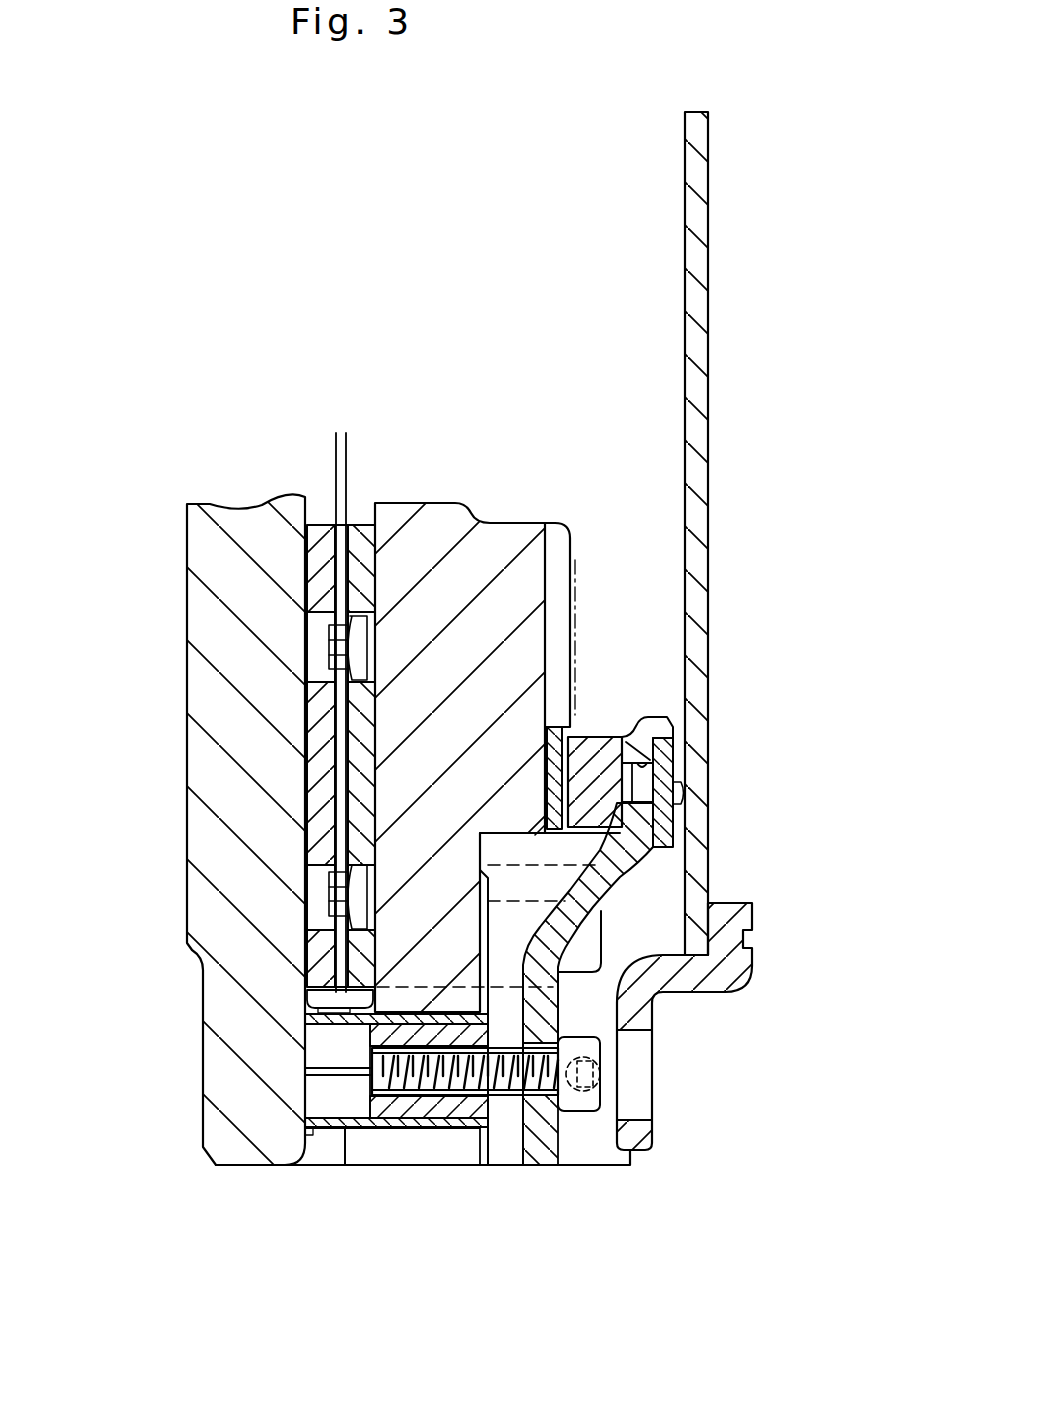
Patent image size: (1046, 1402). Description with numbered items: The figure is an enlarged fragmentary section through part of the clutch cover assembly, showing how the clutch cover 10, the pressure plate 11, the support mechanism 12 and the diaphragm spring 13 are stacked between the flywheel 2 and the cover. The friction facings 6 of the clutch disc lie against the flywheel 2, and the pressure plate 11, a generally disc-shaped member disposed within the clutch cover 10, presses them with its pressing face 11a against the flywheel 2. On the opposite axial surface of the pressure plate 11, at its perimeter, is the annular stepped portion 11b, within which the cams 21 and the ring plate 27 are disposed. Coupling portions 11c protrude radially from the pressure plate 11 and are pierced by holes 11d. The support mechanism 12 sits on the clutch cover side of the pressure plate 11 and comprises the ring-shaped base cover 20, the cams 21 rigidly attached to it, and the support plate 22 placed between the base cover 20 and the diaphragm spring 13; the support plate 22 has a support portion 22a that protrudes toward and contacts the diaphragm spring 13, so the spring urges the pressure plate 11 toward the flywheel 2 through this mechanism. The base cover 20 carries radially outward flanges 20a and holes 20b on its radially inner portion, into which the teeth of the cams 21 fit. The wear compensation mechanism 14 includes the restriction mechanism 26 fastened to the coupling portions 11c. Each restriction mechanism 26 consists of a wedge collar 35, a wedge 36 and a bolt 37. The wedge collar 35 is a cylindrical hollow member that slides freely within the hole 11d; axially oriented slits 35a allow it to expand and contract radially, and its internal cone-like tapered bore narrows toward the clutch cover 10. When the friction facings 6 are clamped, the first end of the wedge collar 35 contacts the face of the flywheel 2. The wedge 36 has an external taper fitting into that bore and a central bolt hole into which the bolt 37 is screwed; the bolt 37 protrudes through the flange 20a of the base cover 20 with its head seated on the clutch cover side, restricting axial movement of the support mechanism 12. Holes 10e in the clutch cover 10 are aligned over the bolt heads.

The flywheel 2 is at (205, 596).
The friction facings 6 is at (363, 533).
The clutch cover 10 is at (737, 918).
The holes 10e is at (636, 1113).
The pressure plate 11 is at (480, 543).
The pressing face 11a is at (335, 553).
The annular stepped portion 11b is at (585, 727).
The coupling portions 11c is at (388, 1147).
The holes 11d is at (442, 1127).
The support mechanism 12 is at (701, 939).
The diaphragm spring 13 is at (703, 380).
The wear compensation mechanism 14 is at (732, 1025).
The base cover 20 is at (667, 715).
The flanges 20a is at (520, 1147).
The holes 20b is at (673, 750).
The cams 21 is at (605, 757).
The support plate 22 is at (683, 850).
The support portion 22a is at (682, 793).
The restriction mechanism 26 is at (327, 1148).
The ring plate 27 is at (550, 793).
The wedge collar 35 is at (330, 1040).
The slits 35a is at (328, 1076).
The wedge 36 is at (388, 1147).
The bolt 37 is at (582, 1105).